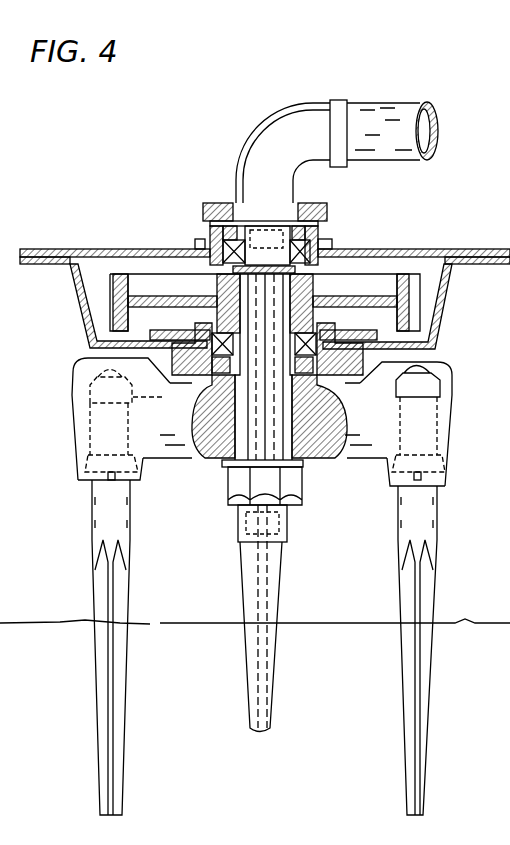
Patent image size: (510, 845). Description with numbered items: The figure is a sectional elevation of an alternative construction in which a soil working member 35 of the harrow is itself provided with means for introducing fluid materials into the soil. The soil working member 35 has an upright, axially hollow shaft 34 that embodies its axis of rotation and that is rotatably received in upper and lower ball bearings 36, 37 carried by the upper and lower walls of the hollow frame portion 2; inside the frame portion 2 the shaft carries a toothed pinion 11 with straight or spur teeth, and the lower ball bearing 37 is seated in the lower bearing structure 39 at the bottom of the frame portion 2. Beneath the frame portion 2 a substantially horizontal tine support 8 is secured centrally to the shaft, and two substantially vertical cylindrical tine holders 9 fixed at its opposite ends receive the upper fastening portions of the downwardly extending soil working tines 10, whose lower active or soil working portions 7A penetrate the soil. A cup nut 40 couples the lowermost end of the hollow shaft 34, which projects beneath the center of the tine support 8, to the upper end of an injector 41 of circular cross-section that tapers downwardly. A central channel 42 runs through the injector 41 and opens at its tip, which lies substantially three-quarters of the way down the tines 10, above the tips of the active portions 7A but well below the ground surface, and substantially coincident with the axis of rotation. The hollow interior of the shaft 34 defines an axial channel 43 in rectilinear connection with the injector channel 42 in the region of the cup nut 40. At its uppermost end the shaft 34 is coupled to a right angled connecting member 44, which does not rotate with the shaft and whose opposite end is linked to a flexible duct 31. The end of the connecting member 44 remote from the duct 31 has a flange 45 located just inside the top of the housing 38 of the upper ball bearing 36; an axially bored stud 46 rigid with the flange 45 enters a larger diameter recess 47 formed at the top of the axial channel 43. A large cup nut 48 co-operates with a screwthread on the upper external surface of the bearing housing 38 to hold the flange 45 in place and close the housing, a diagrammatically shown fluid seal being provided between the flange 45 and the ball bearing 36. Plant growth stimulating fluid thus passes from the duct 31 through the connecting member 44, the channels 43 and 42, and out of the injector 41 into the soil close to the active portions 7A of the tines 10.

The frame portion 2 is at (445, 322).
The active or soil working portion 7A is at (86, 597).
The tine support 8 is at (192, 457).
The tine holder 9 is at (75, 438).
The soil working tine 10 is at (114, 766).
The toothed pinion 11 is at (110, 295).
The flexible duct 31 is at (418, 108).
The hollow shaft 34 is at (290, 295).
The soil working member 35 is at (230, 571).
The upper ball bearing 36 is at (331, 255).
The lower ball bearing 37 is at (320, 328).
The bearing housing 38 is at (205, 250).
The lower bearing housing 39 is at (160, 378).
The cup nut 40 is at (298, 490).
The injector 41 is at (295, 600).
The central channel 42 is at (268, 672).
The axial channel 43 is at (218, 458).
The right angled connecting member 44 is at (326, 103).
The flange 45 is at (303, 205).
The axially bored stud 46 is at (280, 176).
The recess 47 is at (230, 265).
The large cup nut 48 is at (212, 210).